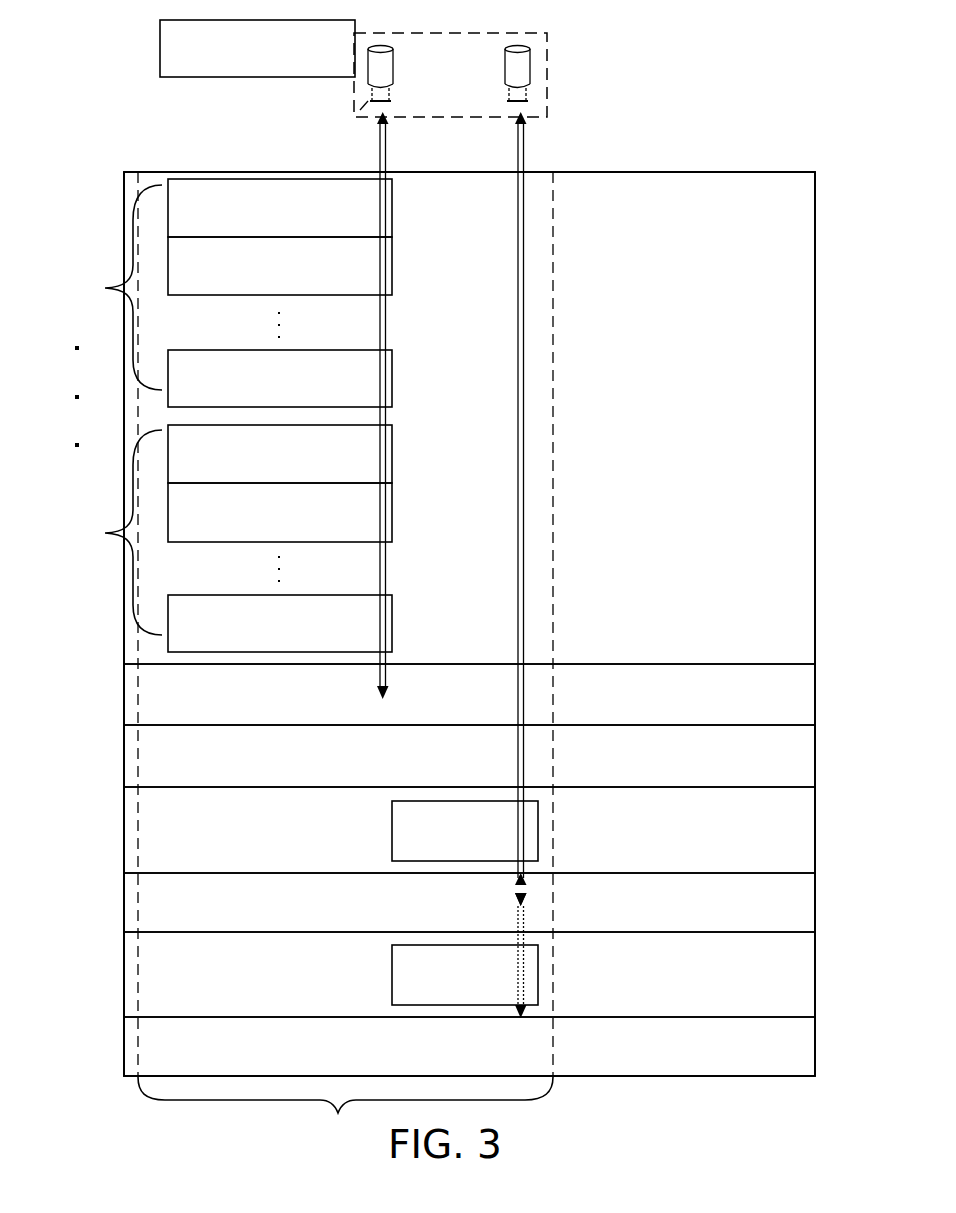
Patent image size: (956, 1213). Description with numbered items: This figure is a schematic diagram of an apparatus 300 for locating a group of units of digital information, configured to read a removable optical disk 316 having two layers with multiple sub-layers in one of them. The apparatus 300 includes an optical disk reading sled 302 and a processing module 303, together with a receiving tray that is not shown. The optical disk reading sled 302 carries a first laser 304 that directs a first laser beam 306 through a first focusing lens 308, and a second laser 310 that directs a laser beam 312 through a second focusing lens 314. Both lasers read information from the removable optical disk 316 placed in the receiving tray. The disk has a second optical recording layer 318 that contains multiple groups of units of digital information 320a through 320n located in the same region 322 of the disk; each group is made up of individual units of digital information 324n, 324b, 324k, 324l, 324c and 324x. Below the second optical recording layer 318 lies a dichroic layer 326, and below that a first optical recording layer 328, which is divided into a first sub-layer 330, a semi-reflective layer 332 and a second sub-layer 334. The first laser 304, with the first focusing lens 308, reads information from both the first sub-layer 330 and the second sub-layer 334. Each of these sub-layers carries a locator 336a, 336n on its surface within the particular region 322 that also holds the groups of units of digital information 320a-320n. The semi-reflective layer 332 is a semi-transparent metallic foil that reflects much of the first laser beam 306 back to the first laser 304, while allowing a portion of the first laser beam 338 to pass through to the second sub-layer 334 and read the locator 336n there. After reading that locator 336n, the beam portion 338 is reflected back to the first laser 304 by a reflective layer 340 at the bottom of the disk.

The apparatus 300 is at (135, 72).
The processing module 303 is at (257, 48).
The optical disk reading sled 302 is at (547, 80).
The first laser 304 is at (531, 56).
The first focusing lens 308 is at (534, 115).
The second laser 310 is at (386, 45).
The second focusing lens 314 is at (358, 107).
The laser beam 312 is at (378, 182).
The first laser beam 306 is at (545, 185).
The removable optical disk 316 is at (740, 172).
The second optical recording layer 318 is at (469, 418).
The group of units of digital information 320a is at (109, 287).
The group of units of digital information 320n is at (109, 532).
The unit of digital information 324n is at (280, 208).
The unit of digital information 324b is at (280, 266).
The unit of digital information 324k is at (280, 378).
The unit of digital information 324l is at (280, 454).
The unit of digital information 324c is at (280, 512).
The unit of digital information 324x is at (280, 623).
The dichroic layer 326 is at (469, 694).
The first optical recording layer 328 is at (469, 756).
The first sub-layer 330 is at (469, 830).
The semi-reflective layer 332 is at (469, 902).
The second sub-layer 334 is at (469, 974).
The locator 336a is at (465, 831).
The locator 336n is at (465, 975).
The portion of the first laser beam 338 is at (516, 910).
The reflective layer 340 is at (469, 1046).
The region 322 is at (345, 1108).